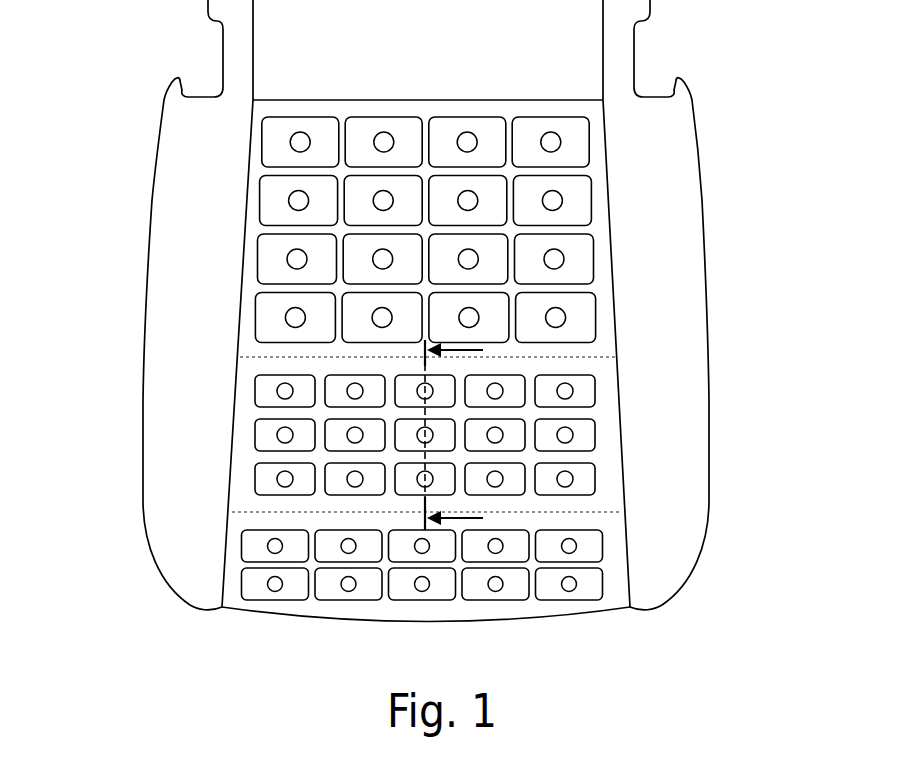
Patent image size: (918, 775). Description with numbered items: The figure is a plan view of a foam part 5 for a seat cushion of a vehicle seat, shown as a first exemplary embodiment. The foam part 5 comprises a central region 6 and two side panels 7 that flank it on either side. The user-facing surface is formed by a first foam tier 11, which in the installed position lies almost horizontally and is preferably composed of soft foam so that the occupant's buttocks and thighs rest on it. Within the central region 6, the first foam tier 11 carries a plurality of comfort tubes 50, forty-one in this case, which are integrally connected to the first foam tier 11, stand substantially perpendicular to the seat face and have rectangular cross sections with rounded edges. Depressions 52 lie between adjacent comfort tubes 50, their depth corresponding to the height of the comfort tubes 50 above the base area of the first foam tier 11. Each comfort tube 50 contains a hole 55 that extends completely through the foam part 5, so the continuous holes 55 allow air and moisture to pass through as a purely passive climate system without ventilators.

The foam part 5 is at (712, 56).
The central region 6 is at (512, 232).
The side panel 7 is at (190, 215).
The first foam tier 11 is at (213, 460).
The comfort tube 50 is at (267, 385).
The depression 52 is at (428, 127).
The hole 55 is at (353, 433).